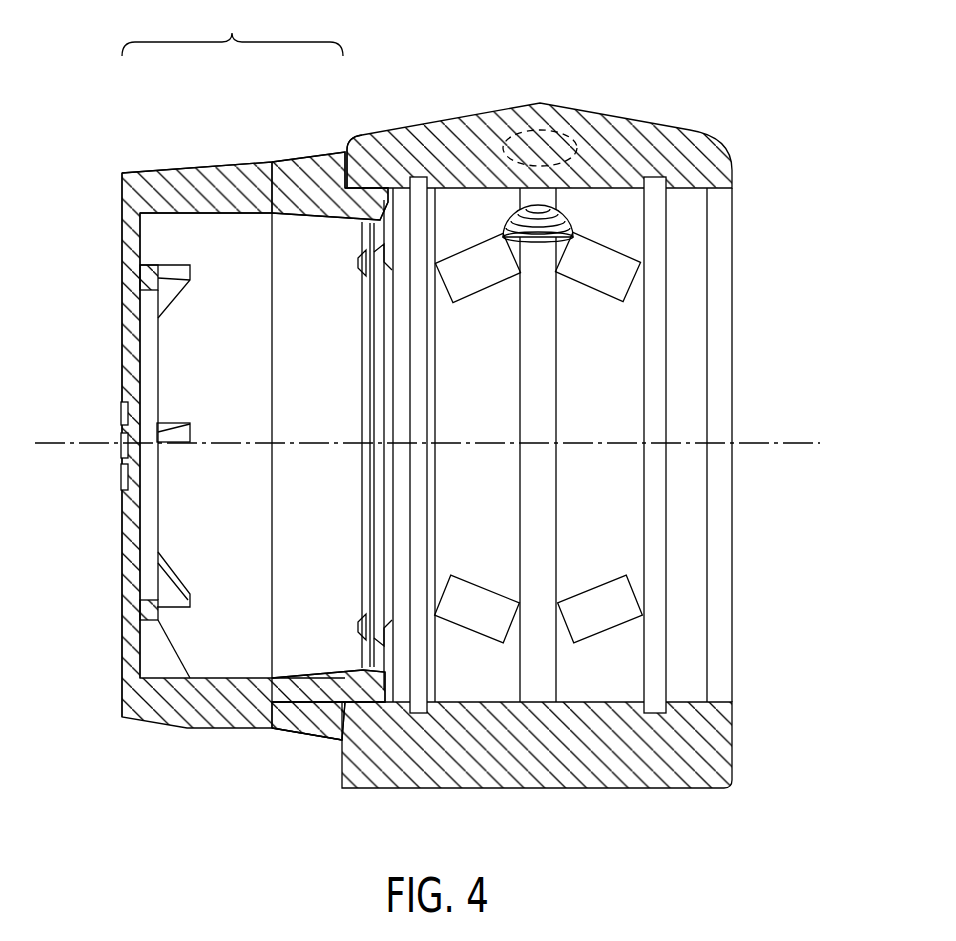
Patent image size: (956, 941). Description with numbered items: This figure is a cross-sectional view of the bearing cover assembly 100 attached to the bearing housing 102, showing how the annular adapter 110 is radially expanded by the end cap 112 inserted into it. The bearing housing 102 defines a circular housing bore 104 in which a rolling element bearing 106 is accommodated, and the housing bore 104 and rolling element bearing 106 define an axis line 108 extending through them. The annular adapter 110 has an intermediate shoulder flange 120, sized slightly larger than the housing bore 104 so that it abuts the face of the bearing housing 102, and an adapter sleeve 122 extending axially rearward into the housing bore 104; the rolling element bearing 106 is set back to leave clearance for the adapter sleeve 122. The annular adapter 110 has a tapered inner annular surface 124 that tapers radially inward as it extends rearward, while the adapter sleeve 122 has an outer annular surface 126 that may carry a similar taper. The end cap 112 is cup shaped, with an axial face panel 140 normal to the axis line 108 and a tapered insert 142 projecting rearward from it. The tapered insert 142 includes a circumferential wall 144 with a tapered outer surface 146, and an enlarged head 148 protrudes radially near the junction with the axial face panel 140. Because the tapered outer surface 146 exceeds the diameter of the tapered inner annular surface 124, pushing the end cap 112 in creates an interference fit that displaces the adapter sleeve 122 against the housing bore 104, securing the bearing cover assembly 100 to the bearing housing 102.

The bearing cover assembly 100 is at (232, 33).
The bearing housing 102 is at (588, 110).
The housing bore 104 is at (690, 358).
The rolling element bearing 106 is at (465, 283).
The axis line 108 is at (793, 443).
The annular adapter 110 is at (285, 172).
The end cap 112 is at (137, 172).
The intermediate shoulder flange 120 is at (340, 155).
The adapter sleeve 122 is at (362, 188).
The tapered inner annular surface 124 is at (338, 682).
The outer annular surface 126 is at (390, 722).
The axial face panel 140 is at (121, 320).
The tapered insert 142 is at (340, 207).
The circumferential wall 144 is at (287, 687).
The tapered outer surface 146 is at (308, 714).
The enlarged head 148 is at (198, 172).